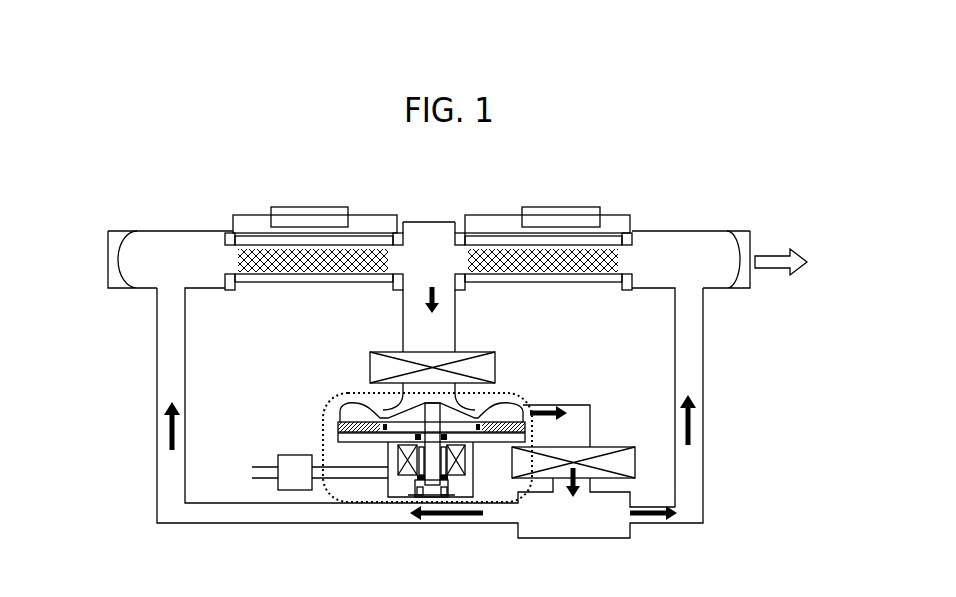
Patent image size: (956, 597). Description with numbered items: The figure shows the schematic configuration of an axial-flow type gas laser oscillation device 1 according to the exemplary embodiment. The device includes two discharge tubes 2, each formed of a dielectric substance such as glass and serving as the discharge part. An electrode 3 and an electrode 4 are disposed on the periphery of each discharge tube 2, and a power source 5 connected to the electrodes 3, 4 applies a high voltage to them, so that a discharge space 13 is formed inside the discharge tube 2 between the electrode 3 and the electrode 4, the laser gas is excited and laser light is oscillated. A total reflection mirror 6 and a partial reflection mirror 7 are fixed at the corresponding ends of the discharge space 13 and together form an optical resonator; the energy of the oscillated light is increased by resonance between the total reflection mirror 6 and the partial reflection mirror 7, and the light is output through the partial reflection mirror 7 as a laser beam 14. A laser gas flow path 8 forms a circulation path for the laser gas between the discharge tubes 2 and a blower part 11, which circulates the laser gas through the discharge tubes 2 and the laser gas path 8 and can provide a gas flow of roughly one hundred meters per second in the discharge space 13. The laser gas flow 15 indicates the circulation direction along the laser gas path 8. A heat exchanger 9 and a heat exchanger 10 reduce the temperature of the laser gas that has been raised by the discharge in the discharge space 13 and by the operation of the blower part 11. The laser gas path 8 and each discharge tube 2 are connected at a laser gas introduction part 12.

The axial-flow type gas laser oscillation device 1 is at (178, 156).
The discharge tube 2 is at (293, 283).
The electrode 3 is at (233, 292).
The electrode 4 is at (397, 287).
The power source 5 is at (317, 205).
The total reflection mirror 6 is at (120, 292).
The partial reflection mirror 7 is at (747, 228).
The laser gas flow path 8 is at (185, 358).
The heat exchanger 9 is at (495, 362).
The heat exchanger 10 is at (635, 467).
The blower part 11 is at (333, 492).
The laser gas introduction part 12 is at (170, 283).
The discharge space 13 is at (320, 266).
The laser beam 14 is at (773, 258).
The laser gas flow 15 is at (168, 430).